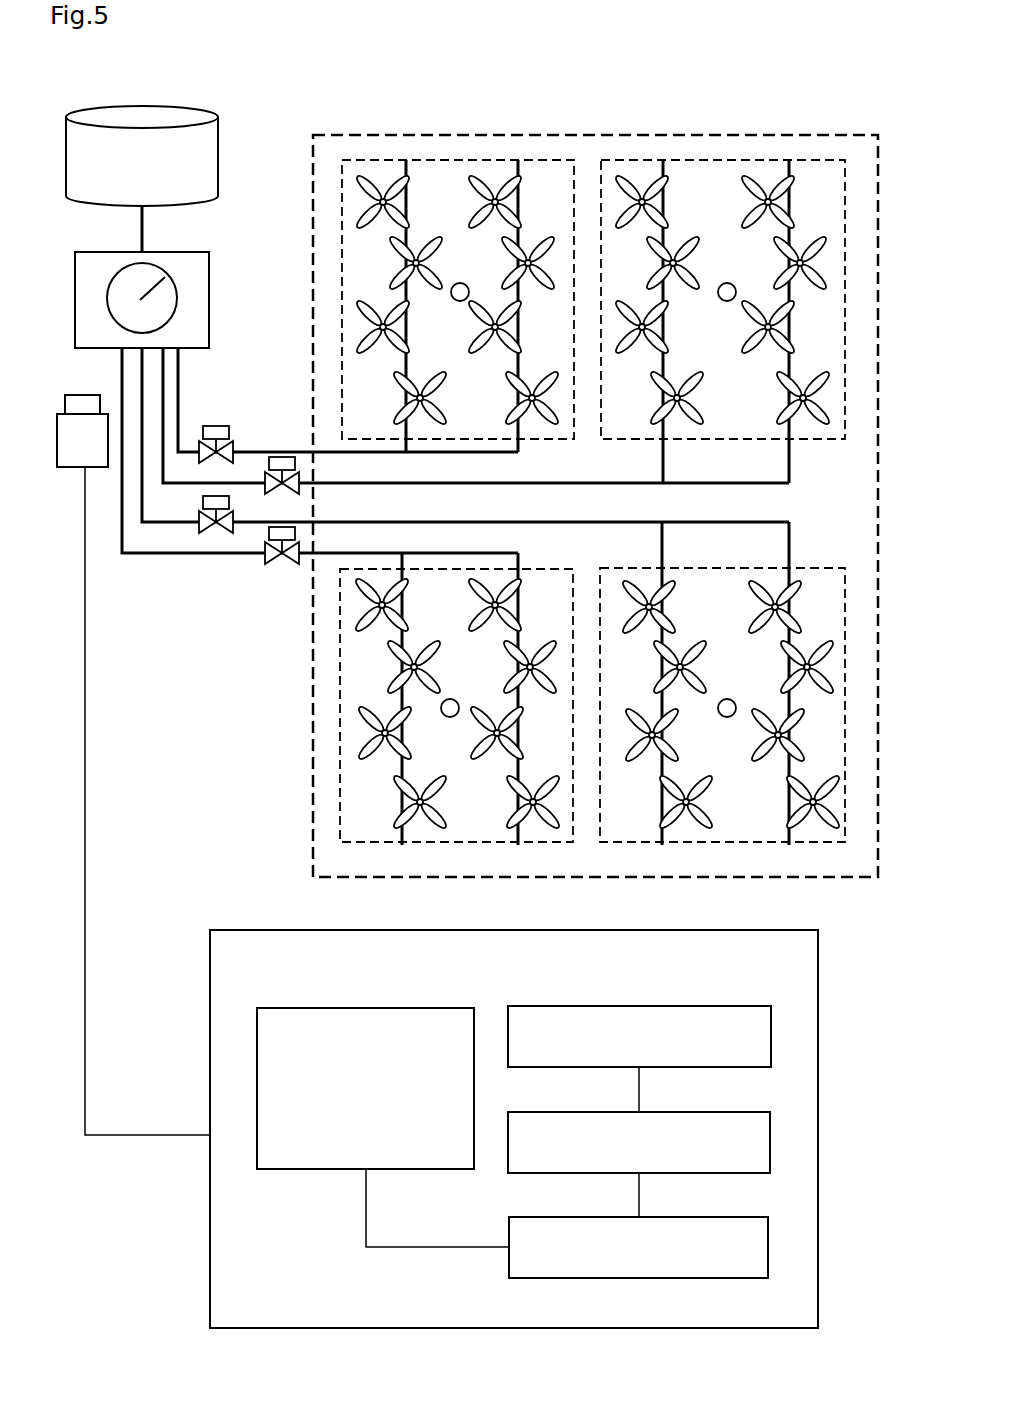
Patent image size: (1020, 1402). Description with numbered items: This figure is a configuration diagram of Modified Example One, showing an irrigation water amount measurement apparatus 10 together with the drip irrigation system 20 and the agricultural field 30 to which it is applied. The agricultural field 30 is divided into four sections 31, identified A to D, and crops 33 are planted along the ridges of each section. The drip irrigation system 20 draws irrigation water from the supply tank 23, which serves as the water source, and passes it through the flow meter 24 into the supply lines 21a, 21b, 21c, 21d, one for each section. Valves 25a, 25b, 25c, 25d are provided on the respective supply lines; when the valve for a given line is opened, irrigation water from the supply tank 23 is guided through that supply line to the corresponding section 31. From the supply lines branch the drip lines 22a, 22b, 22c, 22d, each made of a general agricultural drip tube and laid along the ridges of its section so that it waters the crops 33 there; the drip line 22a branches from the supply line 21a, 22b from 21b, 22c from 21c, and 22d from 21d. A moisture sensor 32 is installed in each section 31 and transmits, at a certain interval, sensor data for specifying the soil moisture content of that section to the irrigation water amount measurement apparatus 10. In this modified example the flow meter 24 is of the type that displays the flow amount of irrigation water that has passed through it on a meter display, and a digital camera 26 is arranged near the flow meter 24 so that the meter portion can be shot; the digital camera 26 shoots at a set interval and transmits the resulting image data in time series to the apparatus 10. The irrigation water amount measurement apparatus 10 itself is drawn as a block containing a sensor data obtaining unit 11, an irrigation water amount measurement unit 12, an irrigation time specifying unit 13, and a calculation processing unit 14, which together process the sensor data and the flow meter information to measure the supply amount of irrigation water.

The irrigation water amount measurement apparatus 10 is at (757, 930).
The sensor data obtaining unit 11 is at (727, 1006).
The irrigation water amount measurement unit 12 is at (393, 1008).
The irrigation time specifying unit 13 is at (727, 1112).
The calculation processing unit 14 is at (727, 1217).
The drip irrigation system 20 is at (266, 134).
The supply line 21a is at (180, 375).
The supply line 21b is at (165, 396).
The supply line 21c is at (172, 557).
The supply line 21d is at (180, 527).
The drip line 22a is at (404, 396).
The drip line 22b is at (661, 396).
The drip line 22c is at (400, 801).
The drip line 22d is at (660, 802).
The supply tank 23 is at (187, 108).
The flow meter 24 is at (200, 252).
The valve 25a is at (218, 426).
The valve 25b is at (284, 457).
The valve 25c is at (291, 564).
The valve 25d is at (203, 504).
The digital camera 26 is at (72, 395).
The agricultural field 30 is at (590, 135).
The section 31 is at (442, 160).
The moisture sensor 32 is at (465, 284).
The crop 33 is at (368, 180).